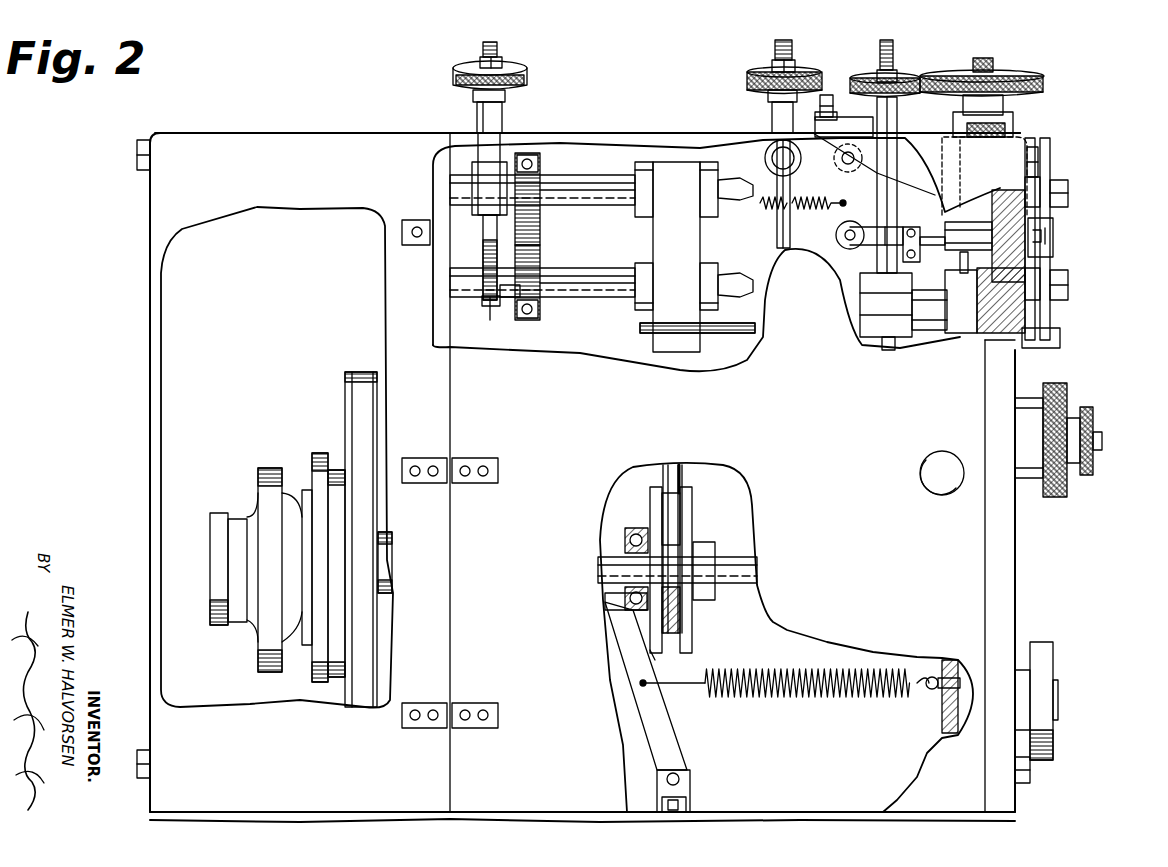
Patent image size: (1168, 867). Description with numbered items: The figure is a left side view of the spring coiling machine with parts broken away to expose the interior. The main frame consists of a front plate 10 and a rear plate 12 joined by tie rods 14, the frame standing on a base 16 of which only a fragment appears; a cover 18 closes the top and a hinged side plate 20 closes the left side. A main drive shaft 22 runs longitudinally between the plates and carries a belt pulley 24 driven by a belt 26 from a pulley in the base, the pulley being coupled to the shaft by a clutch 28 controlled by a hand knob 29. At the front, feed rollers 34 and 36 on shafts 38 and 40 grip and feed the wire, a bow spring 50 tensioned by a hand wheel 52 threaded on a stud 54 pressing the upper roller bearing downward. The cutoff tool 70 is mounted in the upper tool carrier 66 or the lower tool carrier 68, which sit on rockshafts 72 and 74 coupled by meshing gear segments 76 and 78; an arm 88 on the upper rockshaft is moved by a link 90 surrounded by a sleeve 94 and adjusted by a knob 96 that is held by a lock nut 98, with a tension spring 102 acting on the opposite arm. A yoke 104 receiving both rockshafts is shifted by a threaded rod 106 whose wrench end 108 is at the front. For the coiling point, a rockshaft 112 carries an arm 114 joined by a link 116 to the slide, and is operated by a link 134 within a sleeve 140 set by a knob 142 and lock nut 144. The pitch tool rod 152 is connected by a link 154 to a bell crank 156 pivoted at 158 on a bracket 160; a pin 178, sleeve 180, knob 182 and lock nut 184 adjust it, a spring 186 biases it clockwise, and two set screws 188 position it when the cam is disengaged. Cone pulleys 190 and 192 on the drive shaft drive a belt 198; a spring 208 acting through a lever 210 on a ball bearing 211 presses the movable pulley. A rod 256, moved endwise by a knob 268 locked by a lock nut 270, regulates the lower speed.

The front plate 10 is at (1000, 346).
The rear plate 12 is at (440, 243).
The tie rods 14 is at (140, 143).
The base 16 is at (1008, 816).
The cover 18 is at (652, 136).
The side plate 20 is at (983, 530).
The main drive shaft 22 is at (736, 585).
The belt pulley 24 is at (345, 380).
The belt 26 is at (360, 372).
The clutch 28 is at (258, 658).
The hand knob 29 is at (1045, 644).
The feed roller 34 is at (1050, 146).
The feed roller 36 is at (1050, 323).
The feed roller shaft 38 is at (591, 207).
The feed roller shaft 40 is at (572, 282).
The bow spring 50 is at (1012, 120).
The hand wheel 52 is at (1040, 86).
The stud 54 is at (990, 64).
The upper tool carrier 66 is at (1042, 192).
The lower tool carrier 68 is at (1042, 287).
The cutoff tool 70 is at (1053, 256).
The rockshaft 72 is at (600, 178).
The rockshaft 74 is at (602, 297).
The gear segment 76 is at (540, 212).
The gear segment 78 is at (540, 255).
The arm 88 is at (485, 172).
The link 90 is at (483, 226).
The sleeve 94 is at (503, 126).
The knob 96 is at (527, 85).
The lock nut 98 is at (501, 63).
The tension spring 102 is at (482, 290).
The yoke 104 is at (690, 241).
The longitudinal rod 106 is at (707, 340).
The squared end 108 is at (1060, 340).
The rockshaft 112 is at (926, 330).
The arm 114 is at (960, 262).
The link 116 is at (980, 235).
The link 134 is at (880, 348).
The sleeve 140 is at (898, 114).
The knob 142 is at (905, 80).
The lock nut 144 is at (898, 70).
The rod 152 is at (915, 236).
The link 154 is at (892, 232).
The bell crank 156 is at (835, 230).
The pivot 158 is at (843, 166).
The bracket 160 is at (905, 165).
The pin 178 is at (765, 160).
The sleeve 180 is at (772, 121).
The knob 182 is at (747, 84).
The lock nut 184 is at (773, 65).
The spring 186 is at (766, 210).
The set screws 188 is at (827, 95).
The cone pulley 190 is at (693, 640).
The cone pulley 192 is at (654, 652).
The belt 198 is at (683, 481).
The spring 208 is at (777, 700).
The lever 210 is at (668, 736).
The ball bearing 211 is at (630, 534).
The rod 256 is at (1102, 441).
The knob 268 is at (1063, 391).
The lock nut 270 is at (1093, 416).